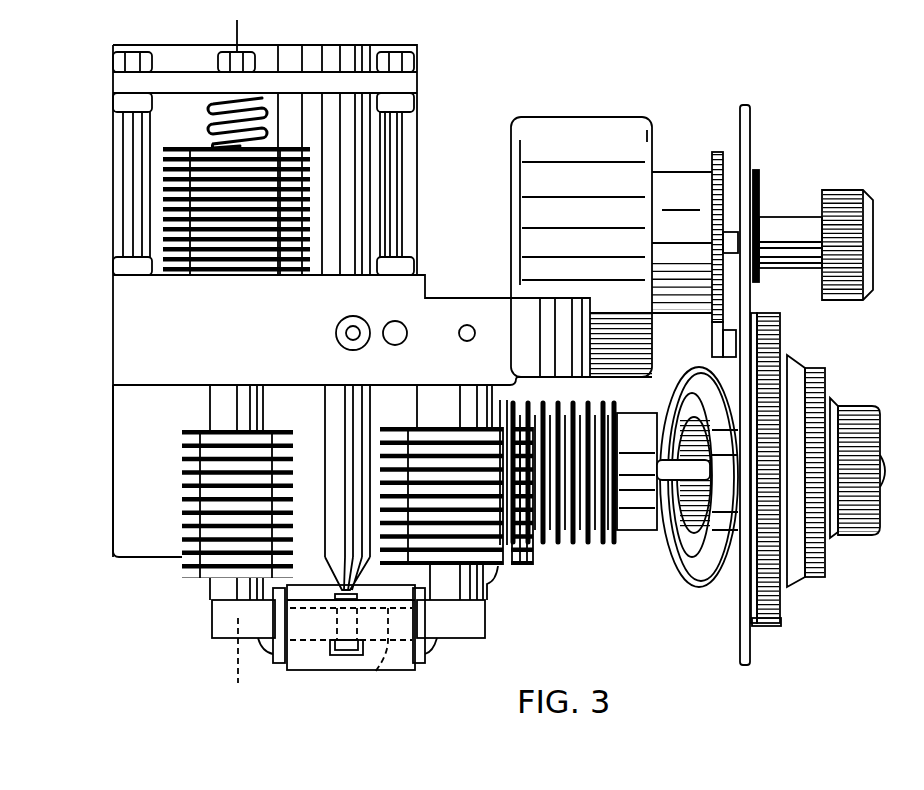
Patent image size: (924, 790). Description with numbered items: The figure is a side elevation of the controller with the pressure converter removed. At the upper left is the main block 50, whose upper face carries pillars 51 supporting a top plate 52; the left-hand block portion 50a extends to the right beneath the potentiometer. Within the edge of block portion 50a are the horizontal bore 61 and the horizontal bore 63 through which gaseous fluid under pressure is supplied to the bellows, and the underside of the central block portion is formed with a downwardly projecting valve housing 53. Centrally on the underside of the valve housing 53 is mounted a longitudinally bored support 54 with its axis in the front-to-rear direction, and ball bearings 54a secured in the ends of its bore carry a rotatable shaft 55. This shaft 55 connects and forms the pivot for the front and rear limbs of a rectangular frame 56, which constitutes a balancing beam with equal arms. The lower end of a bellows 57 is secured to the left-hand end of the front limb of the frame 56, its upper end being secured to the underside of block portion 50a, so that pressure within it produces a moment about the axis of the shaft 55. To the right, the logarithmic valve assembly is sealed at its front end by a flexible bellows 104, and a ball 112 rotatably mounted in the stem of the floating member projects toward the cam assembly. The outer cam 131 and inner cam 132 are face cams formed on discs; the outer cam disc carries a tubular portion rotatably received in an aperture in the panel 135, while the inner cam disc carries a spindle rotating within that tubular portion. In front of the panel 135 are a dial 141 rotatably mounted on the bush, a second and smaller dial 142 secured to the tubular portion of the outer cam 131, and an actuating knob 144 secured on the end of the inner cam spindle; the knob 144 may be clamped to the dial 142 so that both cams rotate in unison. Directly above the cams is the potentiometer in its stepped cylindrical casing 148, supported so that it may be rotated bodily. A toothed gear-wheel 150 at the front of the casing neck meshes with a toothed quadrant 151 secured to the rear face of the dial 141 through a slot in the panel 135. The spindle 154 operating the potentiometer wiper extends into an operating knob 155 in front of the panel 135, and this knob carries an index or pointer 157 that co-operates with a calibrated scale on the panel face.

The main block 50 is at (122, 327).
The block portion 50a is at (533, 360).
The pillars 51 is at (123, 170).
The top plate 52 is at (115, 82).
The valve housing 53 is at (122, 495).
The longitudinally bored support 54 is at (402, 663).
The ball bearings 54a is at (281, 662).
The shaft 55 is at (388, 642).
The rectangular frame 56 is at (221, 626).
The bellows 57 is at (503, 570).
The horizontal bore 61 is at (472, 328).
The horizontal bore 63 is at (404, 327).
The flexible bellows 104 is at (572, 545).
The ball 112 is at (696, 484).
The outer cam 131 is at (677, 585).
The inner cam 132 is at (688, 403).
The panel 135 is at (740, 643).
The dial 141 is at (781, 323).
The second dial 142 is at (826, 372).
The actuating knob 144 is at (870, 406).
The stepped cylindrical casing 148 is at (598, 157).
The toothed gear-wheel 150 is at (718, 152).
The toothed quadrant 151 is at (712, 336).
The spindle 154 is at (788, 217).
The operating knob 155 is at (843, 190).
The index or pointer 157 is at (759, 178).